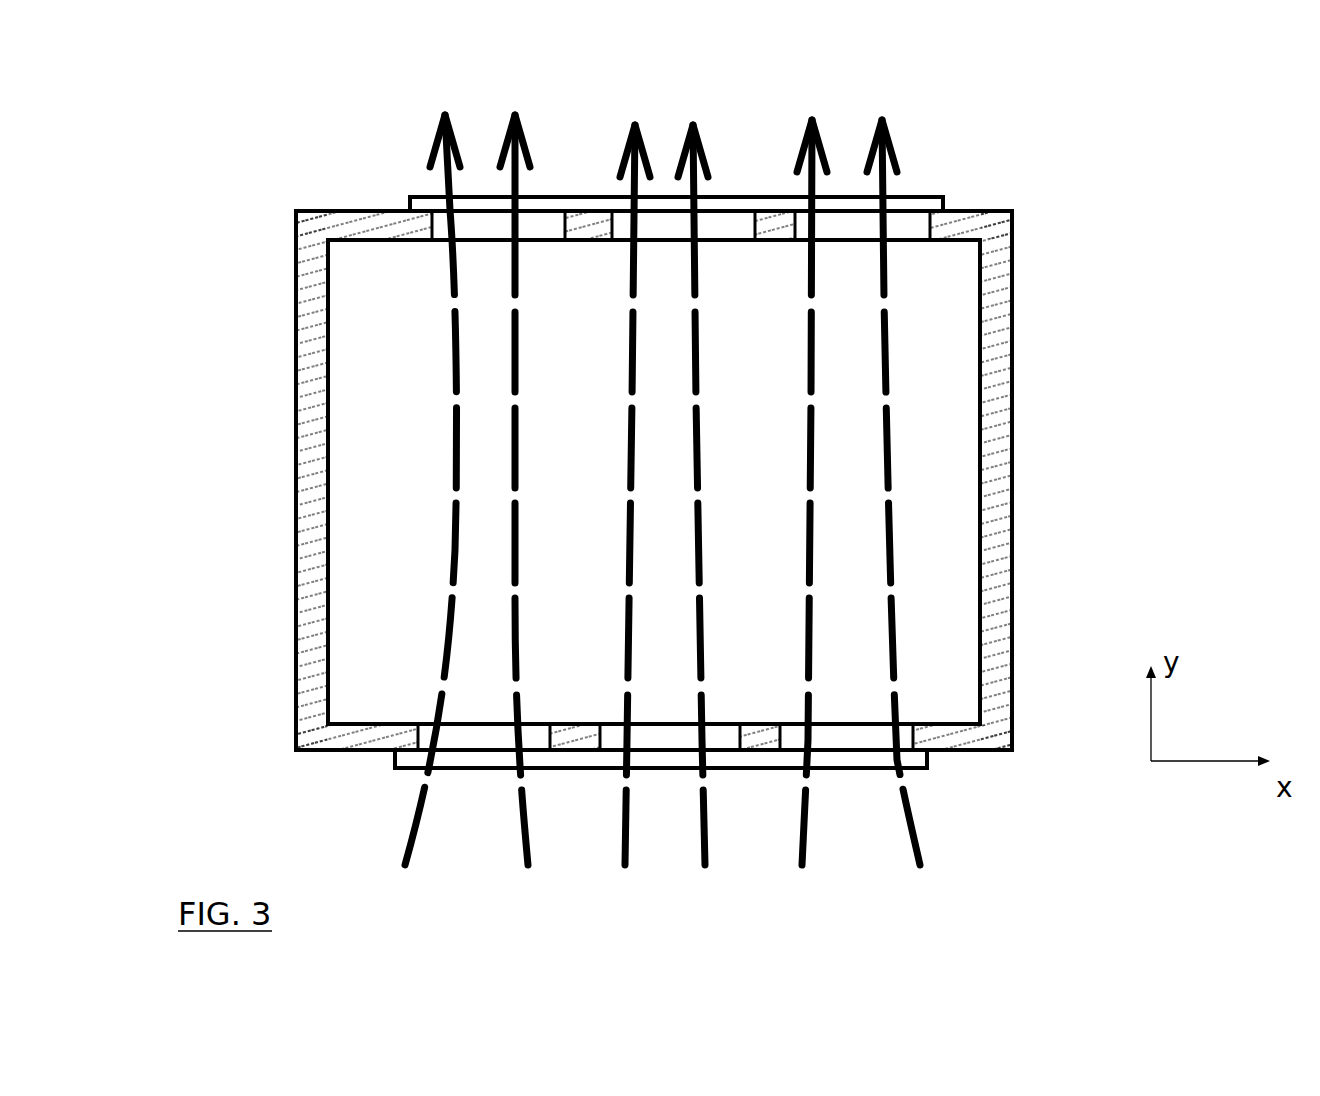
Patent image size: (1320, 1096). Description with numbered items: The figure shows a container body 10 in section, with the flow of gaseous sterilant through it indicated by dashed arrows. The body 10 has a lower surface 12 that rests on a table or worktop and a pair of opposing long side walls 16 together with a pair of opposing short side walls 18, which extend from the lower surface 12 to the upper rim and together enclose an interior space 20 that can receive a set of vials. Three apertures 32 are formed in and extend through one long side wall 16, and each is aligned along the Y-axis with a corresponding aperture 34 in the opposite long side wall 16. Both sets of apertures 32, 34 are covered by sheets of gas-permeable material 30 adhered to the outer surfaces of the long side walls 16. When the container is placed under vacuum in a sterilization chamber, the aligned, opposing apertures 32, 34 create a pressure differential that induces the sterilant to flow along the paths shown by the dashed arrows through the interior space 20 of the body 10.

The body 10 is at (743, 475).
The lower surface 12 is at (953, 593).
The long side wall 16 is at (963, 208).
The short side wall 18 is at (297, 378).
The interior space 20 is at (390, 315).
The gas-permeable material 30 is at (905, 197).
The aperture 32 is at (455, 738).
The aperture 34 is at (540, 232).